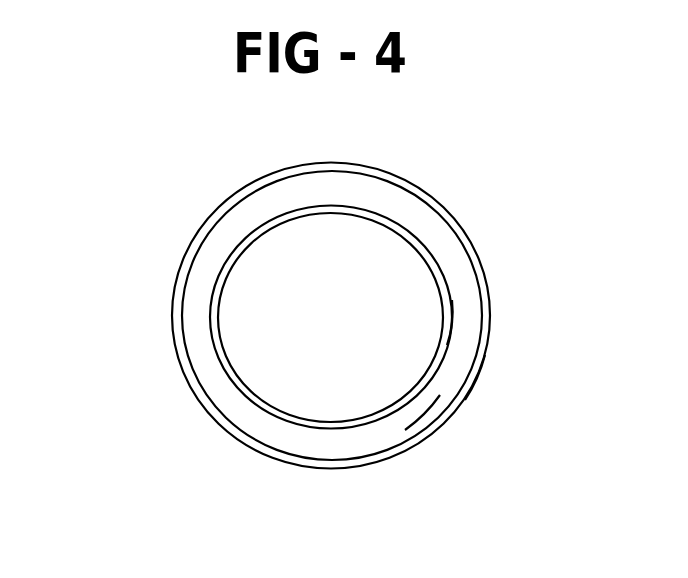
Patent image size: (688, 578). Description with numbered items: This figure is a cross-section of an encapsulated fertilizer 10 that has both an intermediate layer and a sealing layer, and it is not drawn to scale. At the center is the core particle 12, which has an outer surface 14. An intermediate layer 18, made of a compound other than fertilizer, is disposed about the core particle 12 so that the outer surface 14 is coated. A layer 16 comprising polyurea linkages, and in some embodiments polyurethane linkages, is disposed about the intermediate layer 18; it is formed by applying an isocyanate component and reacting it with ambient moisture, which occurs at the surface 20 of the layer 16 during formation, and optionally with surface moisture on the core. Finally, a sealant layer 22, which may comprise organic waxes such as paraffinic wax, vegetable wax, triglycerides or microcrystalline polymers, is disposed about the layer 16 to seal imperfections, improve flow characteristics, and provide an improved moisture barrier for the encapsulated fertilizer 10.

The encapsulated fertilizer 10 is at (182, 240).
The core particle 12 is at (351, 332).
The outer surface 14 is at (307, 429).
The layer 16 is at (418, 415).
The intermediate layer 18 is at (450, 315).
The surface 20 is at (428, 199).
The sealant layer 22 is at (478, 377).